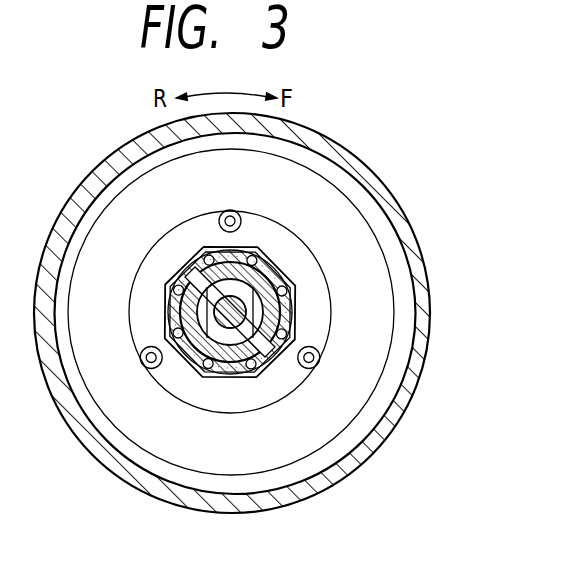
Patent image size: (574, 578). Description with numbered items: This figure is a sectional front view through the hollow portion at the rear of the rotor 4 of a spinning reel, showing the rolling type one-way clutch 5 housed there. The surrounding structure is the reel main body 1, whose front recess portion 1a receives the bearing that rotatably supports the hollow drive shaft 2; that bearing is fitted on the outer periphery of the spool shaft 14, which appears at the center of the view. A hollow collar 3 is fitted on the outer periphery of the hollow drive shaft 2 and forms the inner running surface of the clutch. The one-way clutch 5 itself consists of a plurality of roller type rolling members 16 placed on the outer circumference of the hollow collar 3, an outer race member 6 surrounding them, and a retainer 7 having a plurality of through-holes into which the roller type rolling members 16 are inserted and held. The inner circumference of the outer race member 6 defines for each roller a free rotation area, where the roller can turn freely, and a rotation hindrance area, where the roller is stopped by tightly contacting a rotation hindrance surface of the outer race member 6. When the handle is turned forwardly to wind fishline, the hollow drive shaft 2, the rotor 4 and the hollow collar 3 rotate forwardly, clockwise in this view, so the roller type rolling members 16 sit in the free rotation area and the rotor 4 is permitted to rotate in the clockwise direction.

The reel main body 1 is at (357, 202).
The front recess portion 1a is at (290, 236).
The hollow drive shaft 2 is at (217, 271).
The hollow collar 3 is at (185, 283).
The rotor 4 is at (410, 227).
The rolling type one-way clutch 5 is at (153, 290).
The outer race member 6 is at (165, 320).
The retainer 7 is at (244, 370).
The spool shaft 14 is at (237, 311).
The roller type rolling members 16 is at (272, 368).